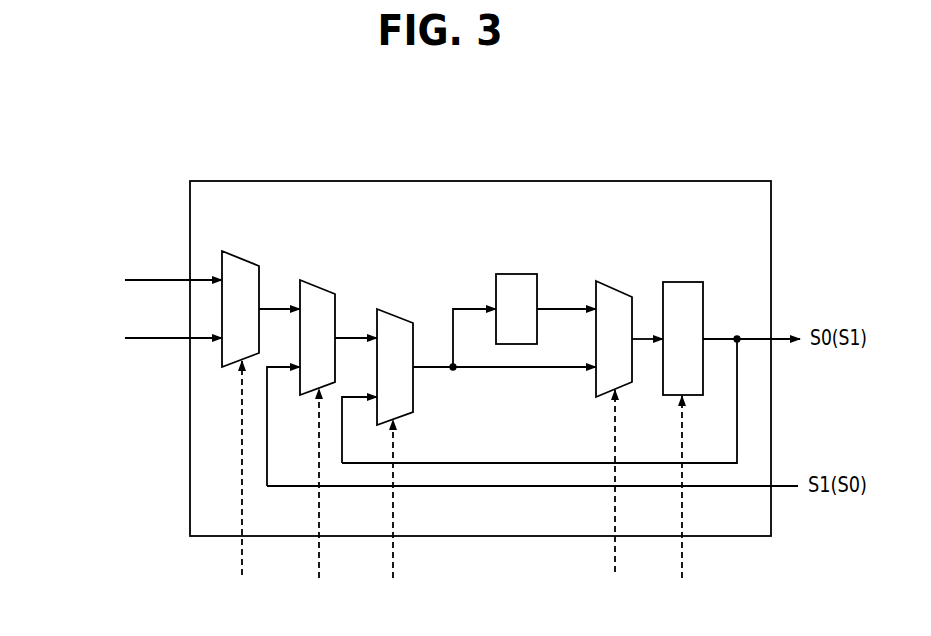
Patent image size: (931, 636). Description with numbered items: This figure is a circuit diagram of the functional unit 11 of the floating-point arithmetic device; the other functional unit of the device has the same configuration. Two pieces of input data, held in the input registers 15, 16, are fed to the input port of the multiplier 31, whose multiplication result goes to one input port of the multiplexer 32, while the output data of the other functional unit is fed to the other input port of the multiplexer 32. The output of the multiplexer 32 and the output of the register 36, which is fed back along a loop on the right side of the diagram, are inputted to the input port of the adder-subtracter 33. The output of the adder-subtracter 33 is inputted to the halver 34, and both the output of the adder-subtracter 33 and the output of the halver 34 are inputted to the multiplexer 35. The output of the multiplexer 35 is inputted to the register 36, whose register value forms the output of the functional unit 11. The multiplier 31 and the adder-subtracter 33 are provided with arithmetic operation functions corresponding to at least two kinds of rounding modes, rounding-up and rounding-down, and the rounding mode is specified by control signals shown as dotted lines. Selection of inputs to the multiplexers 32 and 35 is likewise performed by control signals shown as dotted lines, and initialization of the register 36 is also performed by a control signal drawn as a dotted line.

The functional unit 11 is at (736, 181).
The input register 15 is at (133, 279).
The input register 16 is at (133, 335).
The multiplier 31 is at (245, 252).
The multiplexer 32 is at (321, 288).
The adder-subtracter 33 is at (399, 313).
The halver 34 is at (517, 274).
The multiplexer 35 is at (612, 289).
The register 36 is at (693, 282).